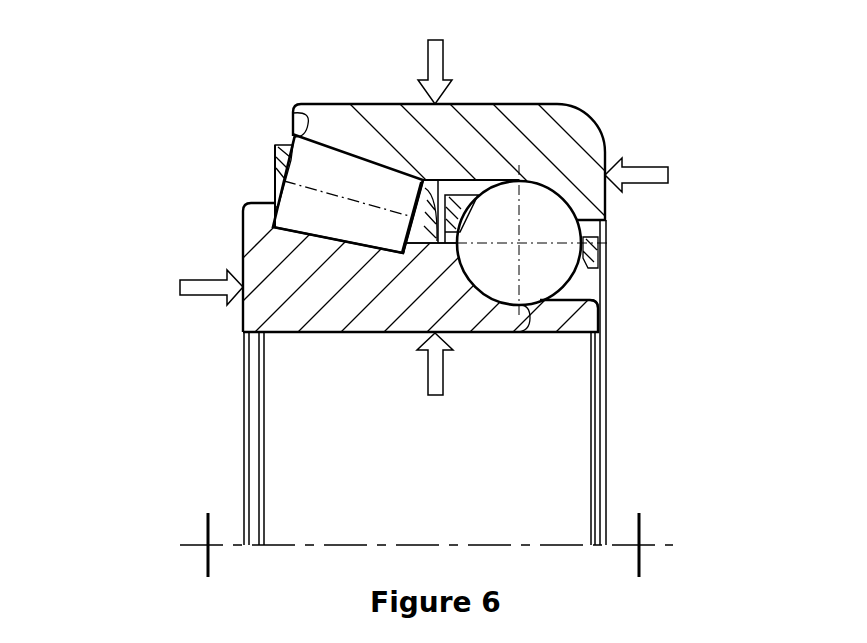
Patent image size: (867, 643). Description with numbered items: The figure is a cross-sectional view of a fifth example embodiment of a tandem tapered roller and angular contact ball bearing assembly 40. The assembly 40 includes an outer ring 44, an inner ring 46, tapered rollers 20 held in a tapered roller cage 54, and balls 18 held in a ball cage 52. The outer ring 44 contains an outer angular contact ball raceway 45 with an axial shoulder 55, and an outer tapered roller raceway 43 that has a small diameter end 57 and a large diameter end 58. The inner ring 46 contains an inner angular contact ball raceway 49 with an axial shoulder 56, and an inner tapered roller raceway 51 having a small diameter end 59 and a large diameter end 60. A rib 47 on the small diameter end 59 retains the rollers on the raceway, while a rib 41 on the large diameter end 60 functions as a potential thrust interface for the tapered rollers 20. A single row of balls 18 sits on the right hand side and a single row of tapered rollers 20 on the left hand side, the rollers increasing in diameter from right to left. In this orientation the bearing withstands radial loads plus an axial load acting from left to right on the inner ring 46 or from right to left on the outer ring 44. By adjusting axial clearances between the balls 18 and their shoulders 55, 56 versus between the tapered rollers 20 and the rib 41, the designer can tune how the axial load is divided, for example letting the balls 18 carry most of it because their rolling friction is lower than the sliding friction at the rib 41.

The tandem tapered roller and angular contact ball bearing assembly 40 is at (663, 106).
The rib 41 is at (243, 206).
The outer ring 44 is at (422, 128).
The outer tapered roller raceway 43 is at (353, 153).
The tapered rollers 20 is at (280, 186).
The balls 18 is at (553, 277).
The outer angular contact ball raceway 45 is at (538, 168).
The inner ring 46 is at (580, 318).
The rib 47 is at (412, 250).
The inner angular contact ball raceway 49 is at (508, 316).
The inner tapered roller raceway 51 is at (280, 288).
The ball cage 52 is at (450, 190).
The tapered roller cage 54 is at (273, 153).
The axial shoulder 55 is at (585, 210).
The axial shoulder 56 is at (430, 248).
The small diameter end 57 is at (408, 176).
The large diameter end 58 is at (290, 112).
The small diameter end 59 is at (340, 245).
The large diameter end 60 is at (257, 247).